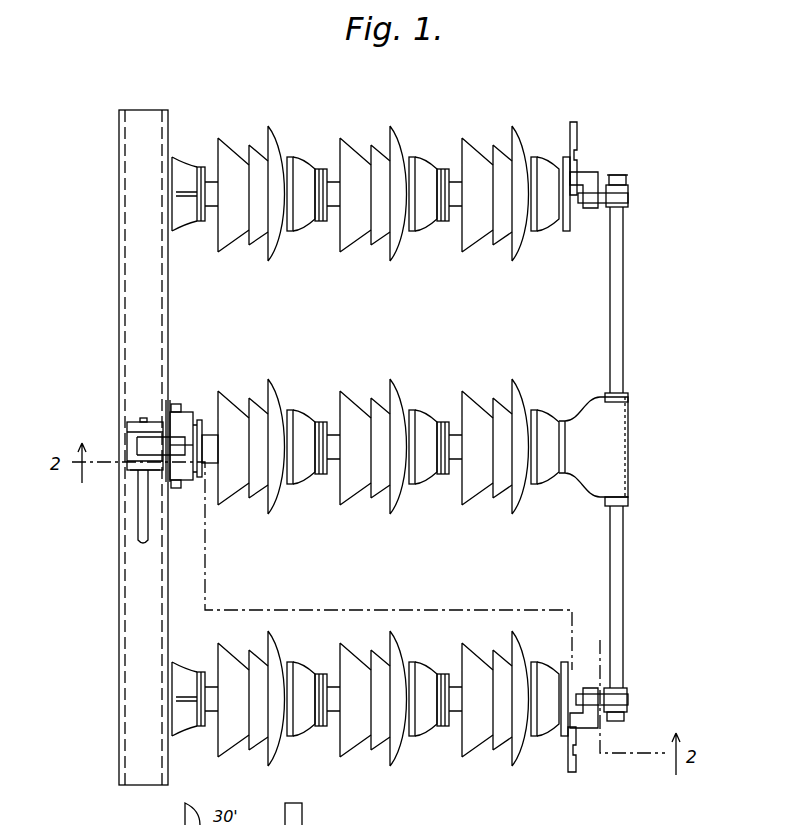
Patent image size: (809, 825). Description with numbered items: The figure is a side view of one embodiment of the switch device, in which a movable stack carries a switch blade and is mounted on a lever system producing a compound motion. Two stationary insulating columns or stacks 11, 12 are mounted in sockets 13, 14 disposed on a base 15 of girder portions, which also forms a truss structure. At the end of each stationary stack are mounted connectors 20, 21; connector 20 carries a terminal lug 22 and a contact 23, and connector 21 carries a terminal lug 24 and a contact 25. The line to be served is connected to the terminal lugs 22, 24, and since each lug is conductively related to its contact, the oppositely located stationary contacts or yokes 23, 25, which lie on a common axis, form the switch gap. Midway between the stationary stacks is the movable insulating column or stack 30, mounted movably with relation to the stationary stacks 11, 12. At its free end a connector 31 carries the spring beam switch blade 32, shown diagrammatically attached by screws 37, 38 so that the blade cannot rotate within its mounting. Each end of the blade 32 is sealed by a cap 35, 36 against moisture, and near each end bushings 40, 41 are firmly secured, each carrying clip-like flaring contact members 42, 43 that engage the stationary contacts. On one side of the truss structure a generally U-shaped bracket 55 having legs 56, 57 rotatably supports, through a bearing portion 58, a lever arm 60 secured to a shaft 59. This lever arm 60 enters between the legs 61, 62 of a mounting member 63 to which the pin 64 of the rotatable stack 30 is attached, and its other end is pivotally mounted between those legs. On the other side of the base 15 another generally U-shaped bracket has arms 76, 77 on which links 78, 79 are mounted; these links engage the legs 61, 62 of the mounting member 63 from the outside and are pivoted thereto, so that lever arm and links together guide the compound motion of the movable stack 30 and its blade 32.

The stationary insulating column 11 is at (396, 138).
The stationary insulating column 12 is at (395, 742).
The socket 13 is at (183, 170).
The socket 14 is at (178, 722).
The base 15 is at (140, 148).
The connector 20 is at (562, 230).
The connector 21 is at (561, 730).
The terminal lug 22 is at (574, 130).
The contact 23 is at (590, 180).
The terminal lug 24 is at (574, 768).
The contact 25 is at (586, 730).
The movable insulating column 30 is at (346, 395).
The connector 31 is at (612, 426).
The switch blade 32 is at (626, 280).
The cap 35 is at (624, 178).
The cap 36 is at (624, 717).
The screw 37 is at (626, 397).
The screw 38 is at (626, 503).
The bushing 40 is at (628, 203).
The bushing 41 is at (622, 690).
The contact member 42 is at (594, 205).
The contact member 43 is at (587, 697).
The U-shaped bracket 55 is at (130, 440).
The leg 56 is at (135, 424).
The leg 57 is at (135, 470).
The bearing portion 58 is at (140, 455).
The shaft 59 is at (143, 536).
The lever arm 60 is at (156, 438).
The leg 61 is at (190, 432).
The leg 62 is at (188, 481).
The mounting member 63 is at (200, 478).
The pin 64 is at (210, 440).
The arm 76 is at (176, 405).
The arm 77 is at (178, 488).
The link 78 is at (193, 425).
The link 79 is at (167, 477).